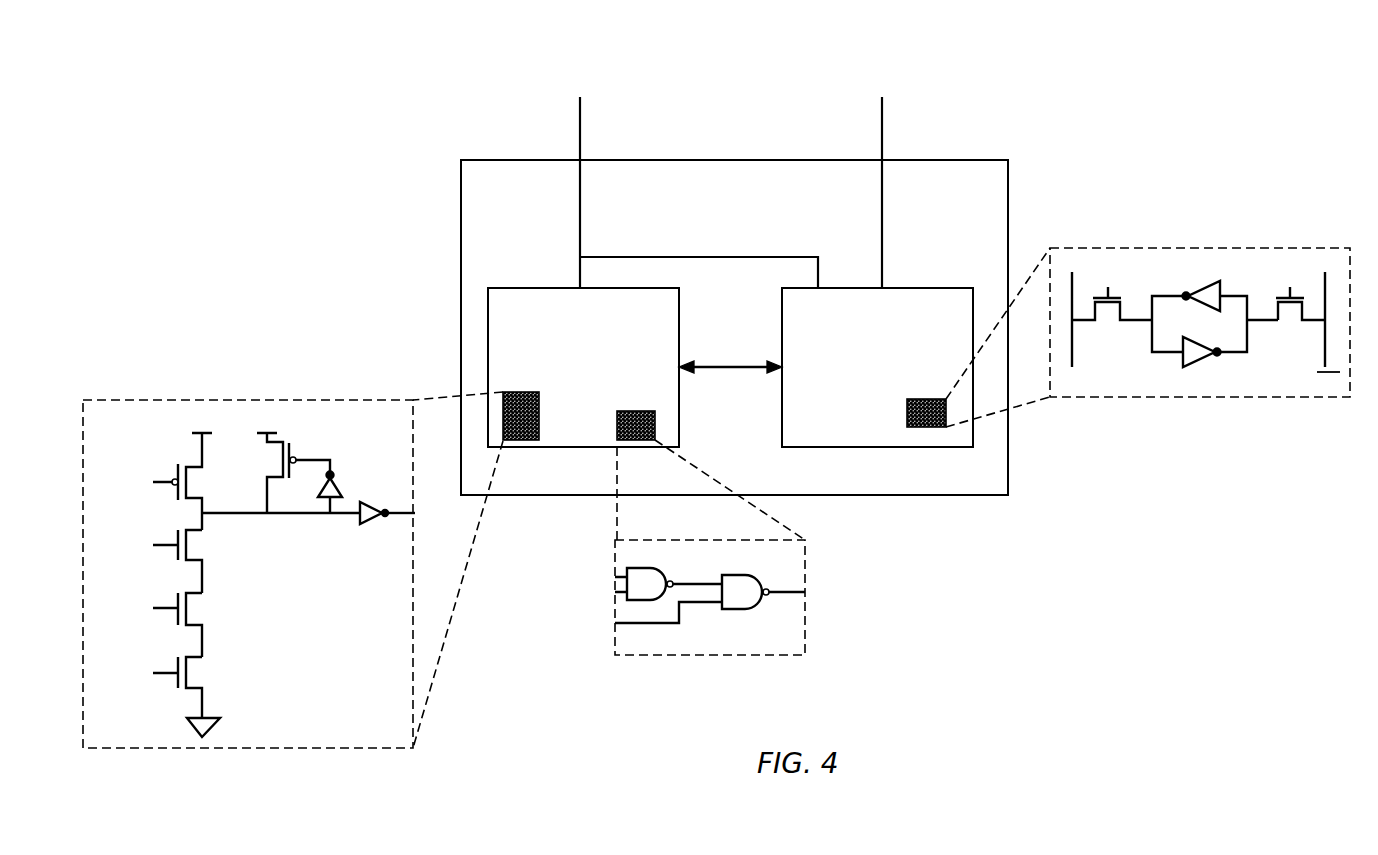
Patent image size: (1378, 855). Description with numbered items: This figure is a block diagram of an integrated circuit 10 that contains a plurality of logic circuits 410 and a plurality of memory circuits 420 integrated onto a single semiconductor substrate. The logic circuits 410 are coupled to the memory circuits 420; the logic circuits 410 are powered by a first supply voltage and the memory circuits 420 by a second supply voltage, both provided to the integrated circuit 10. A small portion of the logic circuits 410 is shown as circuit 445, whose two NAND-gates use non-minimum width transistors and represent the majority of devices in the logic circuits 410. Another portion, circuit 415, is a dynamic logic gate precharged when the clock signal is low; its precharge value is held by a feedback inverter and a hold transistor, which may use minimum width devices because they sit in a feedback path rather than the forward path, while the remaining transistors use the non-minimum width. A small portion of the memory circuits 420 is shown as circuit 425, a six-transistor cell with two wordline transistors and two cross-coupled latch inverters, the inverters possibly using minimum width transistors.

The integrated circuit 10 is at (734, 281).
The logic circuits 410 is at (583, 367).
The memory circuits 420 is at (877, 367).
The circuit 415 is at (249, 558).
The circuit 425 is at (1200, 306).
The circuit 445 is at (761, 595).